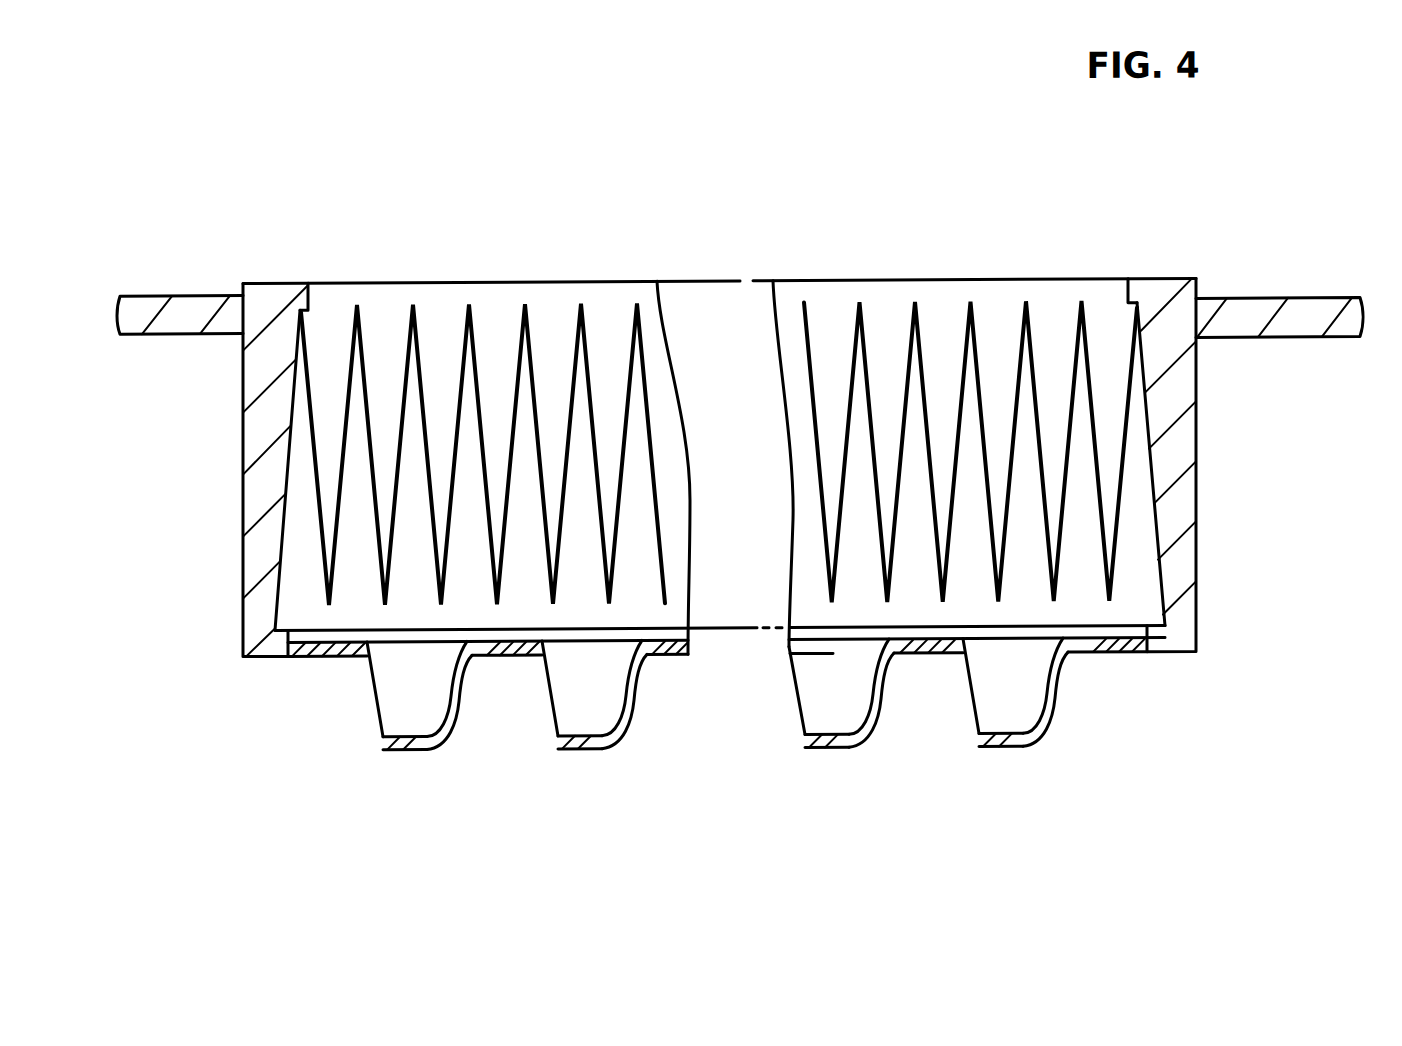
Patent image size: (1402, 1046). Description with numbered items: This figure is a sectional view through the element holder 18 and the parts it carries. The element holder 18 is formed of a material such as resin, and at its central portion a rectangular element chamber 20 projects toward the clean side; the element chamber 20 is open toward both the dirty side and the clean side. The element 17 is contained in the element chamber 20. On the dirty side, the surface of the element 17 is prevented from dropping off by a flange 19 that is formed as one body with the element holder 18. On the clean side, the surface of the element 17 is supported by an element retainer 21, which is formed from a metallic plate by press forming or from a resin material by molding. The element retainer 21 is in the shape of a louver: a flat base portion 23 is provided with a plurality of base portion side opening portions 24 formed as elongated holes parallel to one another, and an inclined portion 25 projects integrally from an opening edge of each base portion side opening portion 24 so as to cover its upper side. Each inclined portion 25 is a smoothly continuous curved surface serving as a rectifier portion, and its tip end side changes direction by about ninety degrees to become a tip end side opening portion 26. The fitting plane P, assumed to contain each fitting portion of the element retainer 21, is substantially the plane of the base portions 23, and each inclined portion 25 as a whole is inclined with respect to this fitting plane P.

The element 17 is at (857, 309).
The element holder 18 is at (1292, 460).
The flange 19 is at (300, 295).
The element chamber 20 is at (603, 302).
The element retainer 21 is at (1088, 741).
The base portion 23 is at (243, 706).
The base portion side opening portion 24 is at (1027, 656).
The inclined portion 25 is at (407, 783).
The tip end side opening portion 26 is at (325, 753).
The fitting plane P is at (1198, 635).